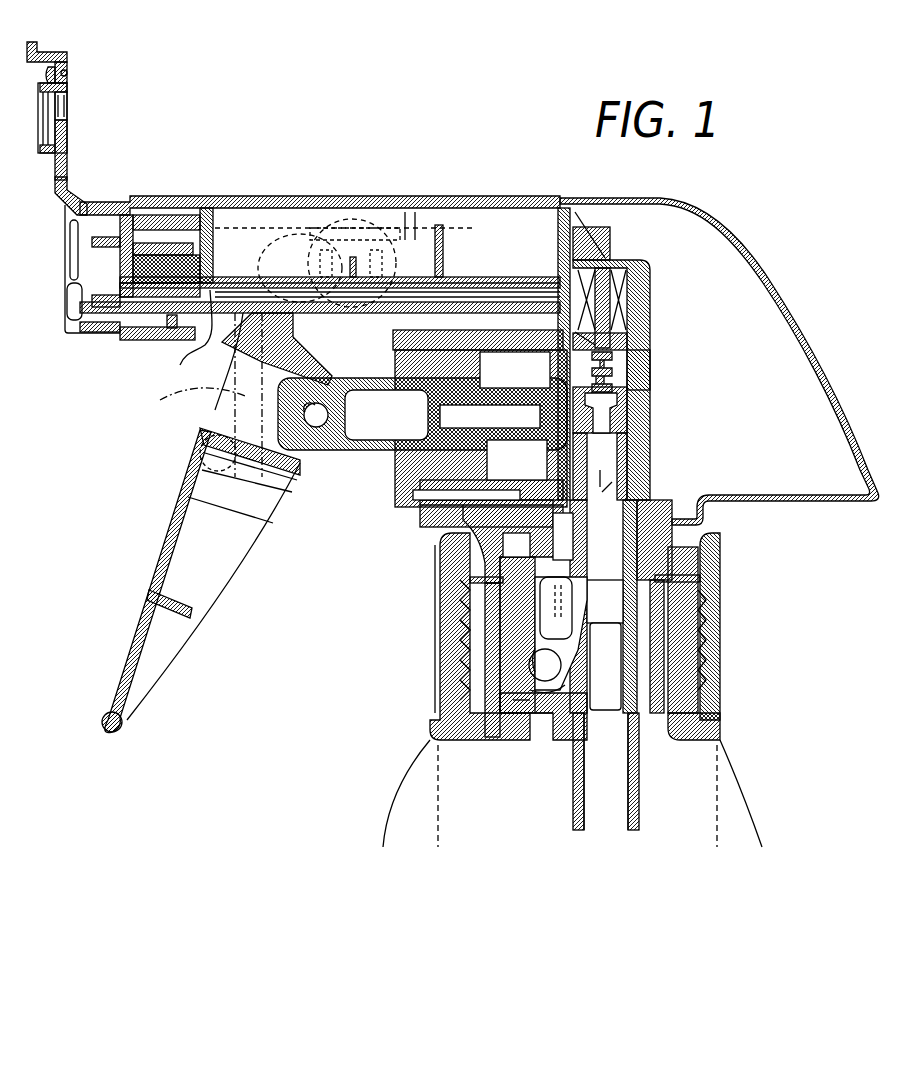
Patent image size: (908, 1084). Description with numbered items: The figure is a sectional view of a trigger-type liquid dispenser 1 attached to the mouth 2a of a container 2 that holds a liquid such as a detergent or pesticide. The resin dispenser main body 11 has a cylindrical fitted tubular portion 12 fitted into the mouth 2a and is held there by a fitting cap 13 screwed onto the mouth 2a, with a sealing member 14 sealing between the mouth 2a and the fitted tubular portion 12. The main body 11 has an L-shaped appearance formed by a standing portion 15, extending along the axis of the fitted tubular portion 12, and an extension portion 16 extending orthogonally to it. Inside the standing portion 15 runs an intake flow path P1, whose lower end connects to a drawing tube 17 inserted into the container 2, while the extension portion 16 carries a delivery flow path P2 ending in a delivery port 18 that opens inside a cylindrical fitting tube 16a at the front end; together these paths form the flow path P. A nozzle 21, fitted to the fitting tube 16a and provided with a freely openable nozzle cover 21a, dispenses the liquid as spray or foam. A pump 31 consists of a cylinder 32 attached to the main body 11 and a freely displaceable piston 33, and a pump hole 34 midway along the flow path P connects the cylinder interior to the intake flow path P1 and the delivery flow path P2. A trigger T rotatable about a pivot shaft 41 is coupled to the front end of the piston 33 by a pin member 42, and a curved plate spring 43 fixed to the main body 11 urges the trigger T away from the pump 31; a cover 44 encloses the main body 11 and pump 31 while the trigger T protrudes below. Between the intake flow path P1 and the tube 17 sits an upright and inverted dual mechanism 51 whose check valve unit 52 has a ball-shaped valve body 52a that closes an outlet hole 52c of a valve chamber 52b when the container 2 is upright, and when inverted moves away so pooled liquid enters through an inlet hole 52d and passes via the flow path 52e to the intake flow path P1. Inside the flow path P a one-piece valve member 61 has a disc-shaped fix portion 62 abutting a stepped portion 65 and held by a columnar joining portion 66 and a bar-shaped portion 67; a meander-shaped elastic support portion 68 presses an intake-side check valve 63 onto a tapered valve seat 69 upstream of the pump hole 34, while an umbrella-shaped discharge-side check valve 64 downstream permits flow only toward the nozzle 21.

The trigger-type liquid dispenser 1 is at (775, 222).
The container 2 is at (745, 782).
The mouth 2a is at (686, 680).
The dispenser main body 11 is at (652, 438).
The fitted tubular portion 12 is at (675, 510).
The fitting cap 13 is at (718, 612).
The sealing member 14 is at (680, 578).
The standing portion 15 is at (650, 405).
The extension portion 16 is at (458, 240).
The fitting tube 16a is at (158, 232).
The drawing tube 17 is at (636, 830).
The delivery port 18 is at (205, 340).
The nozzle 21 is at (125, 196).
The nozzle cover 21a is at (66, 133).
The pump 31 is at (385, 488).
The cylinder 32 is at (500, 325).
The piston 33 is at (356, 455).
The pump hole 34 is at (556, 373).
The pivot shaft 41 is at (330, 240).
The pin member 42 is at (305, 408).
The plate spring 43 is at (240, 383).
The cover 44 is at (760, 320).
The upright and inverted dual mechanism 51 is at (545, 733).
The check valve unit 52 is at (525, 678).
The valve body 52a is at (536, 665).
The valve chamber 52b is at (548, 620).
The outlet hole 52c is at (520, 715).
The inlet hole 52d is at (465, 632).
The flow path 52e is at (563, 738).
The valve member 61 is at (620, 292).
The fix portion 62 is at (560, 345).
The intake-side check valve 63 is at (628, 396).
The discharge-side check valve 64 is at (612, 332).
The stepped portion 65 is at (640, 360).
The joining portion 66 is at (612, 340).
The bar-shaped portion 67 is at (608, 278).
The elastic support portion 68 is at (612, 372).
The valve seat 69 is at (625, 428).
The flow path P is at (603, 492).
The intake flow path P1 is at (607, 463).
The delivery flow path P2 is at (412, 245).
The trigger T is at (120, 645).